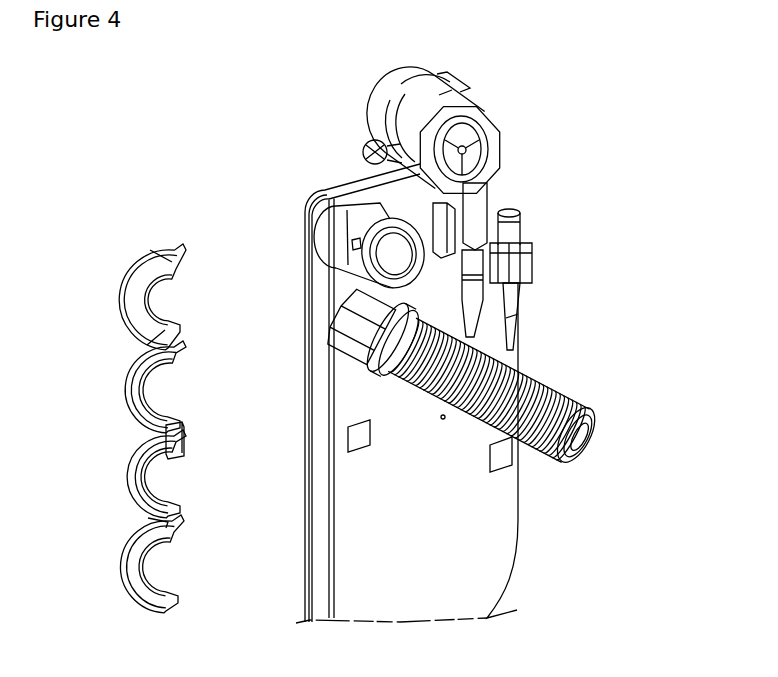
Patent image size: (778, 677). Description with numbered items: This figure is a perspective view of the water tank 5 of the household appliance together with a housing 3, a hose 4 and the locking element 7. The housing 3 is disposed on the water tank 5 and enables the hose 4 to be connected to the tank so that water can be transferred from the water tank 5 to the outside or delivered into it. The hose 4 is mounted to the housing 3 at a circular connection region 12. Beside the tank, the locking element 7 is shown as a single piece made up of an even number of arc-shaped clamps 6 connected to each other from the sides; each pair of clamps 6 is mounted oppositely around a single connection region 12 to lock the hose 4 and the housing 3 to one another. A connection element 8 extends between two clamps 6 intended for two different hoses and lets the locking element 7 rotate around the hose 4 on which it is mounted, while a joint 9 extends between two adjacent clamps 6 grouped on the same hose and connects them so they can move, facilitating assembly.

The housing 3 is at (347, 255).
The hose 4 is at (524, 391).
The water tank 5 is at (490, 518).
The arc-shaped clamp 6 is at (150, 320).
The locking element 7 is at (159, 364).
The connection element 8 is at (180, 433).
The joint 9 is at (150, 517).
The circular connection region 12 is at (390, 395).